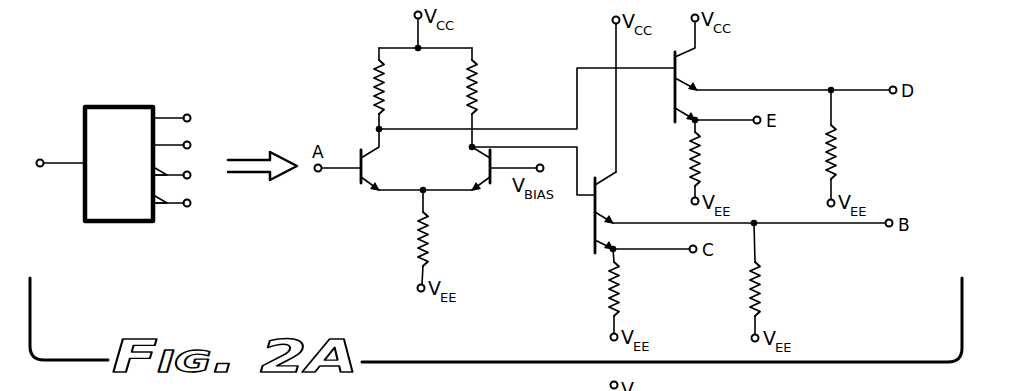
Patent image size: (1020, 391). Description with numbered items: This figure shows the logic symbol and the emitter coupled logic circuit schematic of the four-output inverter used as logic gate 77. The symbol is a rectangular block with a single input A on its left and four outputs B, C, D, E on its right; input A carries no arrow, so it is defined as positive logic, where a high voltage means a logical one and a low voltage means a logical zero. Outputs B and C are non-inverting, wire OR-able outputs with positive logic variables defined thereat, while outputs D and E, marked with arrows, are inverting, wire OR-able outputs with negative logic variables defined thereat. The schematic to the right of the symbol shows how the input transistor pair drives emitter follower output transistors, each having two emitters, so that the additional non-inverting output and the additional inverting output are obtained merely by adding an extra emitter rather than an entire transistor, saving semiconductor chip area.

The logic gate 77 is at (123, 105).
The input A is at (58, 151).
The B output B is at (181, 119).
The C output C is at (181, 146).
The D output D is at (181, 176).
The E output E is at (180, 204).